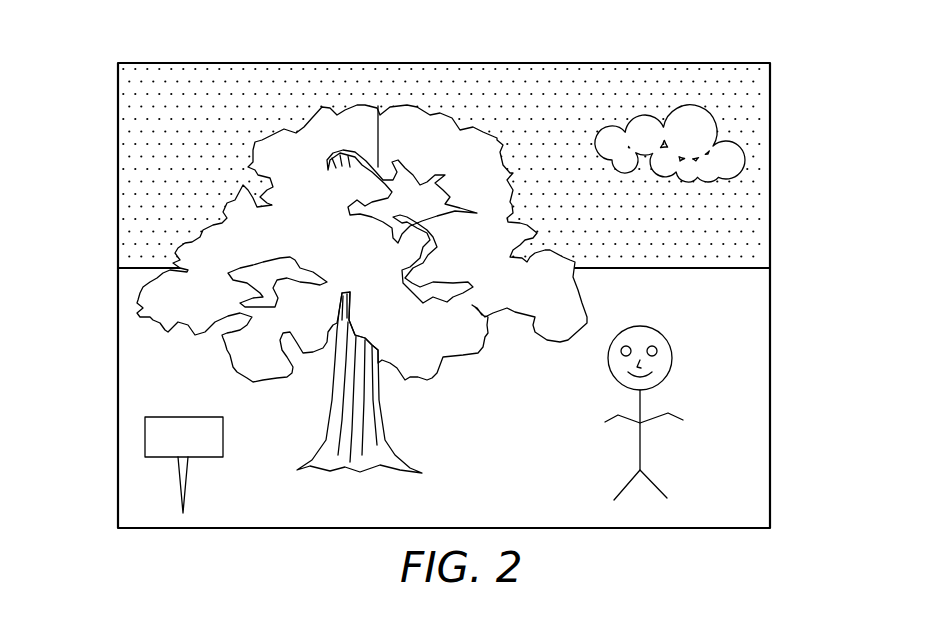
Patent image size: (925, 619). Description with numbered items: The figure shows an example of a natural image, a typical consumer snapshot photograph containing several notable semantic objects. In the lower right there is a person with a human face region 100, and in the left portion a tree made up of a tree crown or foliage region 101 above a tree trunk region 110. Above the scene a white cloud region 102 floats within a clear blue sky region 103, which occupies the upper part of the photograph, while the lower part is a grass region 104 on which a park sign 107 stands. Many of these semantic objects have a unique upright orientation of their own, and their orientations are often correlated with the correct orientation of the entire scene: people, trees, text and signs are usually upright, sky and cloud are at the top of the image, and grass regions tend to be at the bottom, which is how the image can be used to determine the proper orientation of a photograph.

The human face region 100 is at (648, 337).
The tree crown region 101 is at (340, 128).
The white cloud region 102 is at (653, 140).
The clear blue sky region 103 is at (758, 230).
The grass region 104 is at (757, 348).
The park sign 107 is at (145, 436).
The tree trunk region 110 is at (375, 397).